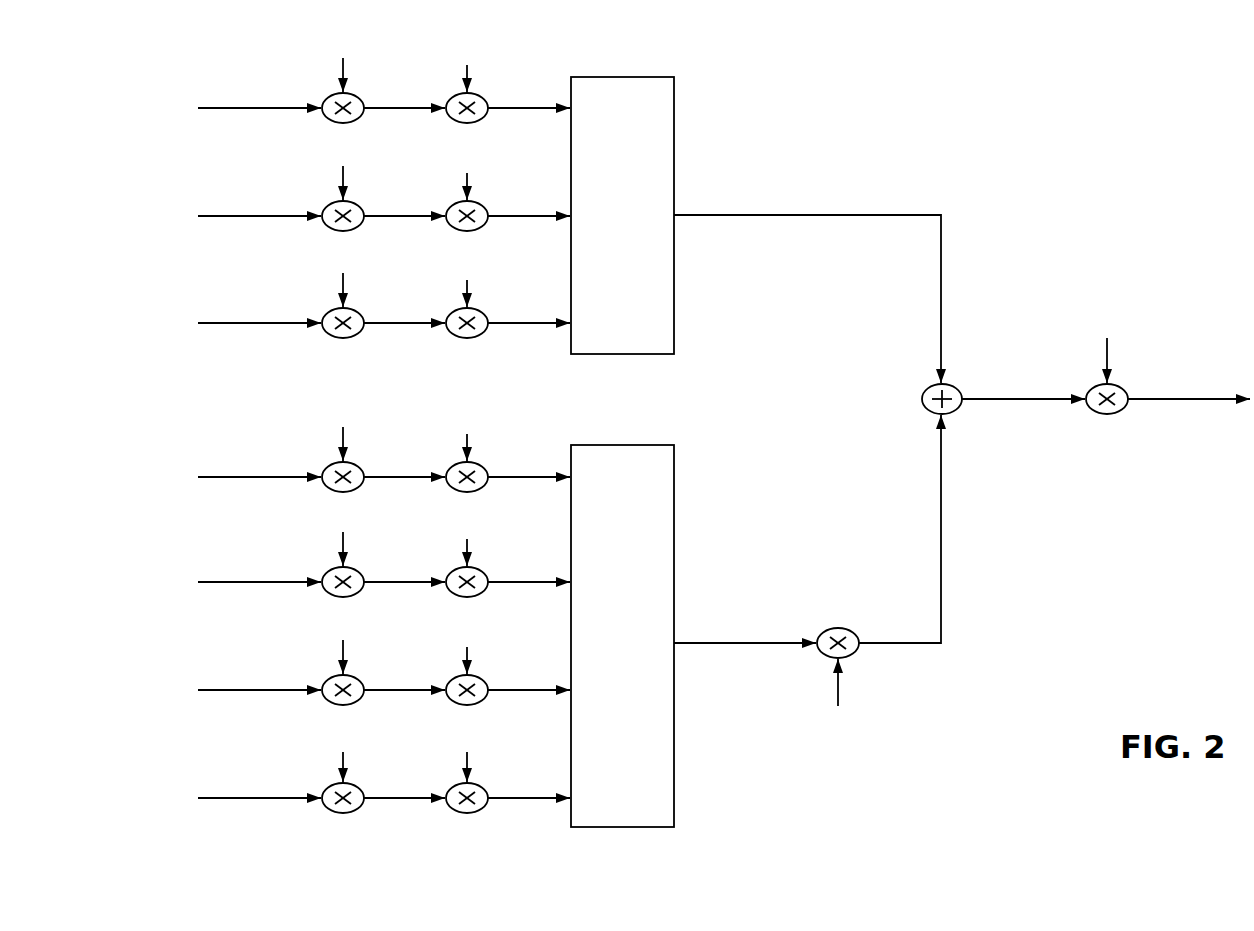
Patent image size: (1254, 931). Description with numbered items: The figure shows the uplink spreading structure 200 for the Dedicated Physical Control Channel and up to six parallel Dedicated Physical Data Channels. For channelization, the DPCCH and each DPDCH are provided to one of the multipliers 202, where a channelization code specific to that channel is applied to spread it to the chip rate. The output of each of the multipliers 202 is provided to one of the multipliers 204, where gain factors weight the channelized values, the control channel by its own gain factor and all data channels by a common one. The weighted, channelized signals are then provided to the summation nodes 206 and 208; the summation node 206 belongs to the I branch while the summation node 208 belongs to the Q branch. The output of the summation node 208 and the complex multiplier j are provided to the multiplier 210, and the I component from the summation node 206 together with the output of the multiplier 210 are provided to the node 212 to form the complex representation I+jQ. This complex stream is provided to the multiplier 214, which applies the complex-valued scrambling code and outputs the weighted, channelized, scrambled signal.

The uplink spreading and modulation structure 200 is at (685, 418).
The multipliers 202 is at (298, 52).
The multipliers 204 is at (447, 52).
The summation node 206 is at (604, 238).
The summation node 208 is at (604, 667).
The multiplier 210 is at (837, 627).
The node 212 is at (923, 393).
The multiplier 214 is at (1097, 385).